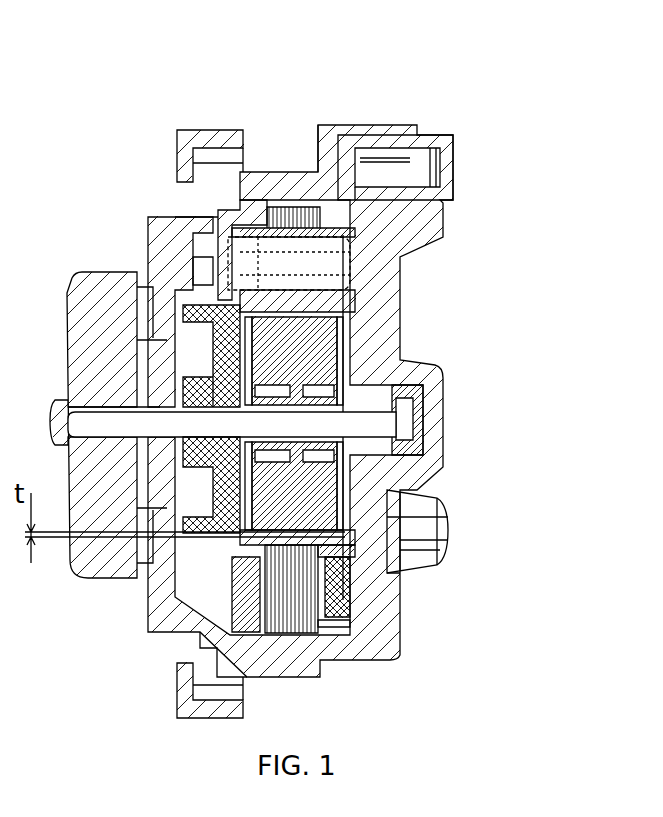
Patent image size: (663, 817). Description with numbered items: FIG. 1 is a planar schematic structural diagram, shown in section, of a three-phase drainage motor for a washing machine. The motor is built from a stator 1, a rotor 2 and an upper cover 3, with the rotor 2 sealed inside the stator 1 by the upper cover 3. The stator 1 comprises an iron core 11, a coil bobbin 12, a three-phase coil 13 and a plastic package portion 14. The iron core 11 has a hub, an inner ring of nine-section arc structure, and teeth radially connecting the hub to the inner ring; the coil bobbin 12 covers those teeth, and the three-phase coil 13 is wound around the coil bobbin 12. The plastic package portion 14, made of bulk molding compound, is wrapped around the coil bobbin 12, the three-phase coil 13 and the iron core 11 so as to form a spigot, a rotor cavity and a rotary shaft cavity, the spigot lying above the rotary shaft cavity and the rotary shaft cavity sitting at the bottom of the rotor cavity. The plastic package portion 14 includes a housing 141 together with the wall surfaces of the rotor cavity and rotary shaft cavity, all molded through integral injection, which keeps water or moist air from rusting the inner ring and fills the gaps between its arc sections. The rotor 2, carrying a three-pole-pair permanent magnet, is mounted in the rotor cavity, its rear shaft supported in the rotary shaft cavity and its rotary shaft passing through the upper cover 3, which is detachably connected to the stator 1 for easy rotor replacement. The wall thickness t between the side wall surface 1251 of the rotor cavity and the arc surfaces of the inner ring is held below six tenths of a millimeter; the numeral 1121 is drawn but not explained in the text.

The stator 1 is at (385, 248).
The iron core 11 is at (366, 632).
The coil bobbin 12 is at (375, 586).
The three-phase coil 13 is at (407, 609).
The plastic package portion 14 is at (313, 421).
The housing 141 is at (394, 105).
The mounting portion 1121 is at (463, 545).
The side wall surface 1251 is at (463, 527).
The rotor 2 is at (384, 417).
The upper cover 3 is at (246, 313).